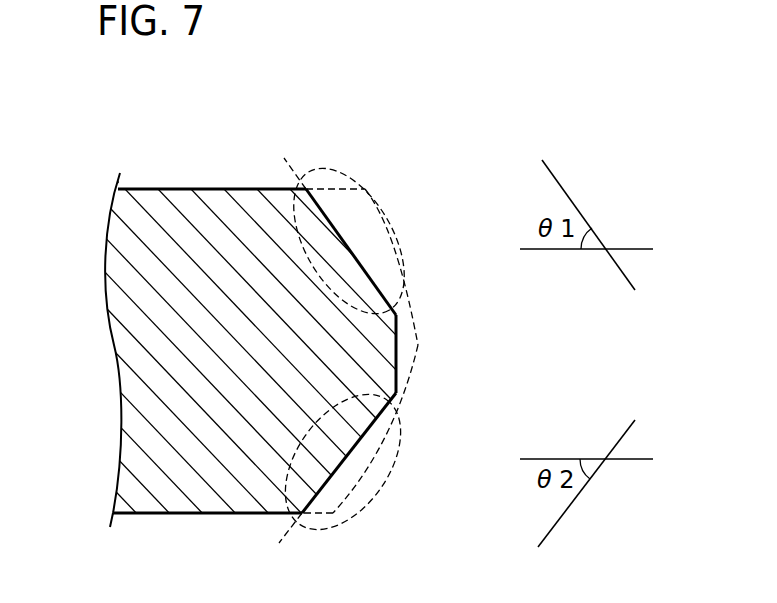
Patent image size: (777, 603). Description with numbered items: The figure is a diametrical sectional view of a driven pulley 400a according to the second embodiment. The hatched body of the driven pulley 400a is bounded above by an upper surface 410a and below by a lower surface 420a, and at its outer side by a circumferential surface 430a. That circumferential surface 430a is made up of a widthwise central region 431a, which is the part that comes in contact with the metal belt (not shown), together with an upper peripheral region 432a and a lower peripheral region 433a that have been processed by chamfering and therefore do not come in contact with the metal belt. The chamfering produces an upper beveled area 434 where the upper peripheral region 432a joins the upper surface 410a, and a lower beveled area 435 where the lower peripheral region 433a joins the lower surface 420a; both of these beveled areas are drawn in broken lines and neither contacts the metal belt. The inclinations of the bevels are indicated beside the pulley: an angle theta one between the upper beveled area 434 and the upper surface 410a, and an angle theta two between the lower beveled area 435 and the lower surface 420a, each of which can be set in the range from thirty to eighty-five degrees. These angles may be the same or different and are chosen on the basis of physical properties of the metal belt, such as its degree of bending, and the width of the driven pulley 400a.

The driven pulley 400a is at (150, 313).
The upper surface 410a is at (231, 181).
The lower surface 420a is at (213, 520).
The circumferential surface 430a is at (453, 350).
The widthwise central region 431a is at (408, 352).
The upper peripheral region 432a is at (375, 258).
The lower peripheral region 433a is at (421, 452).
The upper beveled area 434 is at (368, 190).
The lower beveled area 435 is at (362, 503).